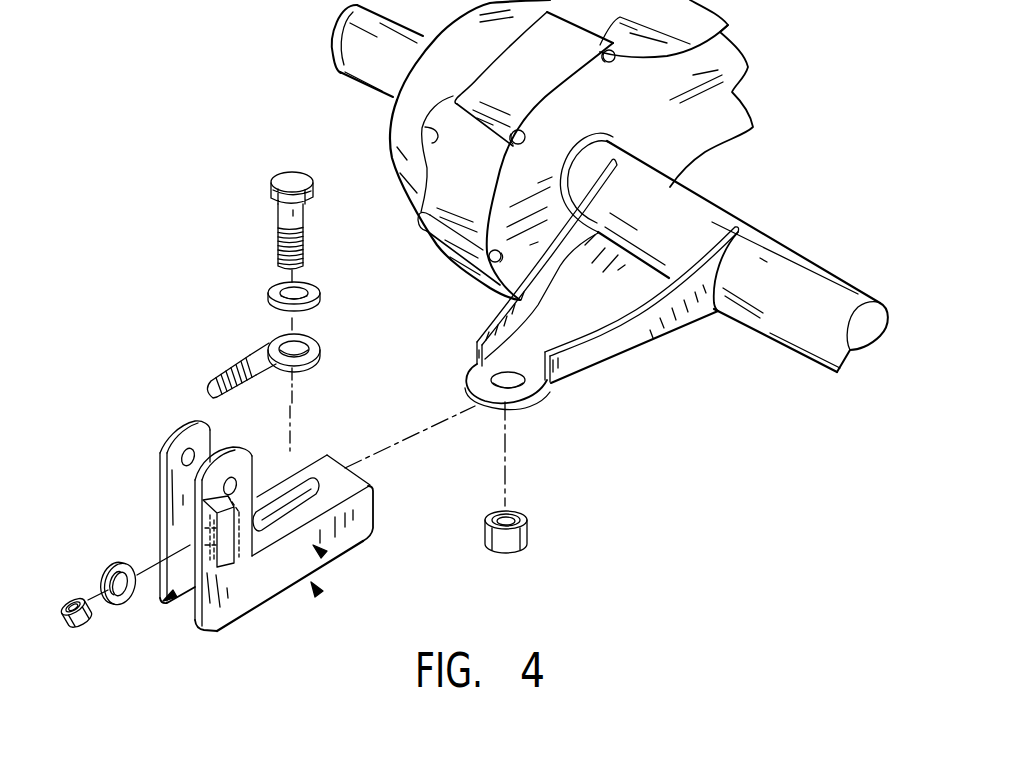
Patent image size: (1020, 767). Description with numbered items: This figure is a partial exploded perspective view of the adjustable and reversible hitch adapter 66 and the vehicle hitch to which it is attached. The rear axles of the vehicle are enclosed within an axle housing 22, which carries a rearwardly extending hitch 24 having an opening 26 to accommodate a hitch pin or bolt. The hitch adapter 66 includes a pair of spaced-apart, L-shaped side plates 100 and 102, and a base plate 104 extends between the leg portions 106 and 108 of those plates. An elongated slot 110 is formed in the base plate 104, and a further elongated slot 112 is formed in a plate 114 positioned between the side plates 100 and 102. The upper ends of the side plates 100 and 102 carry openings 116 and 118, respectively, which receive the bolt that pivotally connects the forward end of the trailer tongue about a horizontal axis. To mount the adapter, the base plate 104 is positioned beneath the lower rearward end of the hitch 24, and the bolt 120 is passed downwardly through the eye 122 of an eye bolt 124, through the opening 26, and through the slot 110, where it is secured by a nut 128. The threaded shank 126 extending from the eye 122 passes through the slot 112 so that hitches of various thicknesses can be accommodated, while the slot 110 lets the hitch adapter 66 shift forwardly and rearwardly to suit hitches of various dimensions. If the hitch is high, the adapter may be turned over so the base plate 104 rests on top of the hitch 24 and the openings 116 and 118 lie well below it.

The axle housing 22 is at (803, 260).
The hitch 24 is at (631, 344).
The opening 26 is at (509, 386).
The hitch adapter 66 is at (319, 594).
The side plate 100 is at (322, 554).
The side plate 102 is at (164, 602).
The base plate 104 is at (371, 487).
The leg portion 106 is at (364, 538).
The leg portion 108 is at (310, 463).
The elongated slot 110 is at (298, 490).
The elongated slot 112 is at (218, 634).
The plate 114 is at (240, 553).
The opening 116 is at (224, 488).
The opening 118 is at (183, 459).
The bolt 120 is at (283, 220).
The eye 122 is at (319, 345).
The eye bolt 124 is at (249, 357).
The threaded shank 126 is at (217, 381).
The nut 128 is at (526, 539).